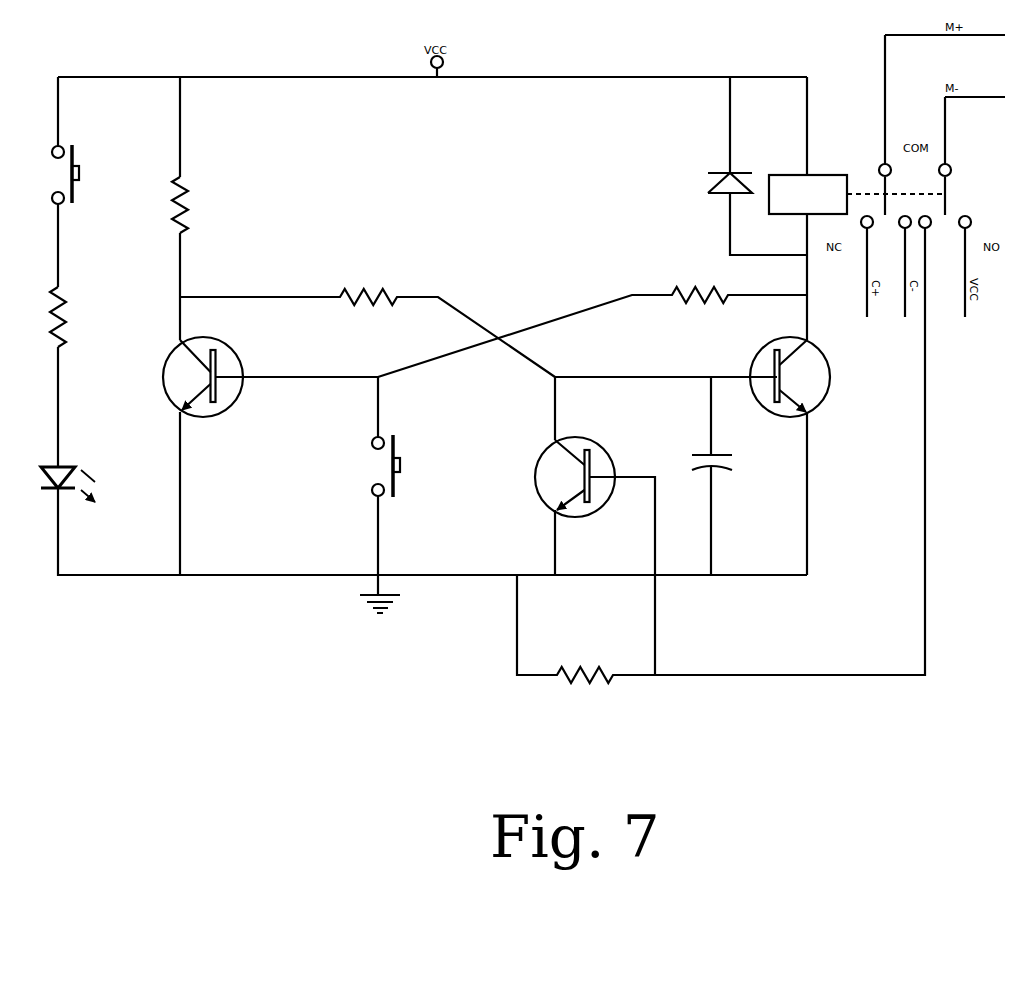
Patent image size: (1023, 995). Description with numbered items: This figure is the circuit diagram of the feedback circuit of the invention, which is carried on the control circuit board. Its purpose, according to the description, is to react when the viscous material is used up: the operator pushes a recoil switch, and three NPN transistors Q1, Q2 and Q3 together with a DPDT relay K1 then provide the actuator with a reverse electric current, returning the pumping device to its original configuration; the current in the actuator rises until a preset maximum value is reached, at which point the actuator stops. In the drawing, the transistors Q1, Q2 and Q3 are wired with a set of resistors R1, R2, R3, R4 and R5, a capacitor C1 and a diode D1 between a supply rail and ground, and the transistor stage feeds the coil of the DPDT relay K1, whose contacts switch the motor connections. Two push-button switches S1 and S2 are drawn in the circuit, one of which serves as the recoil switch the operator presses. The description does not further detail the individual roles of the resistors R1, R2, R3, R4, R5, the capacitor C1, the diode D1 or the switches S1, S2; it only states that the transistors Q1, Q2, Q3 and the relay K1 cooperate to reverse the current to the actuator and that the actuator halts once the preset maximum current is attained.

The push button switch S2 is at (78, 174).
The resistor R1 is at (187, 205).
The resistor R5 is at (73, 317).
The NPN transistor Q1 is at (270, 377).
The resistor R2 is at (367, 324).
The resistor R3 is at (592, 324).
The push button switch SW-PB S1 is at (401, 466).
The NPN transistor Q3 is at (595, 548).
The capacitor C1 is at (666, 423).
The NPN transistor Q2 is at (797, 377).
The resistor R4 is at (721, 455).
The diode D1 is at (736, 135).
The DPDT relay K1 is at (885, 176).